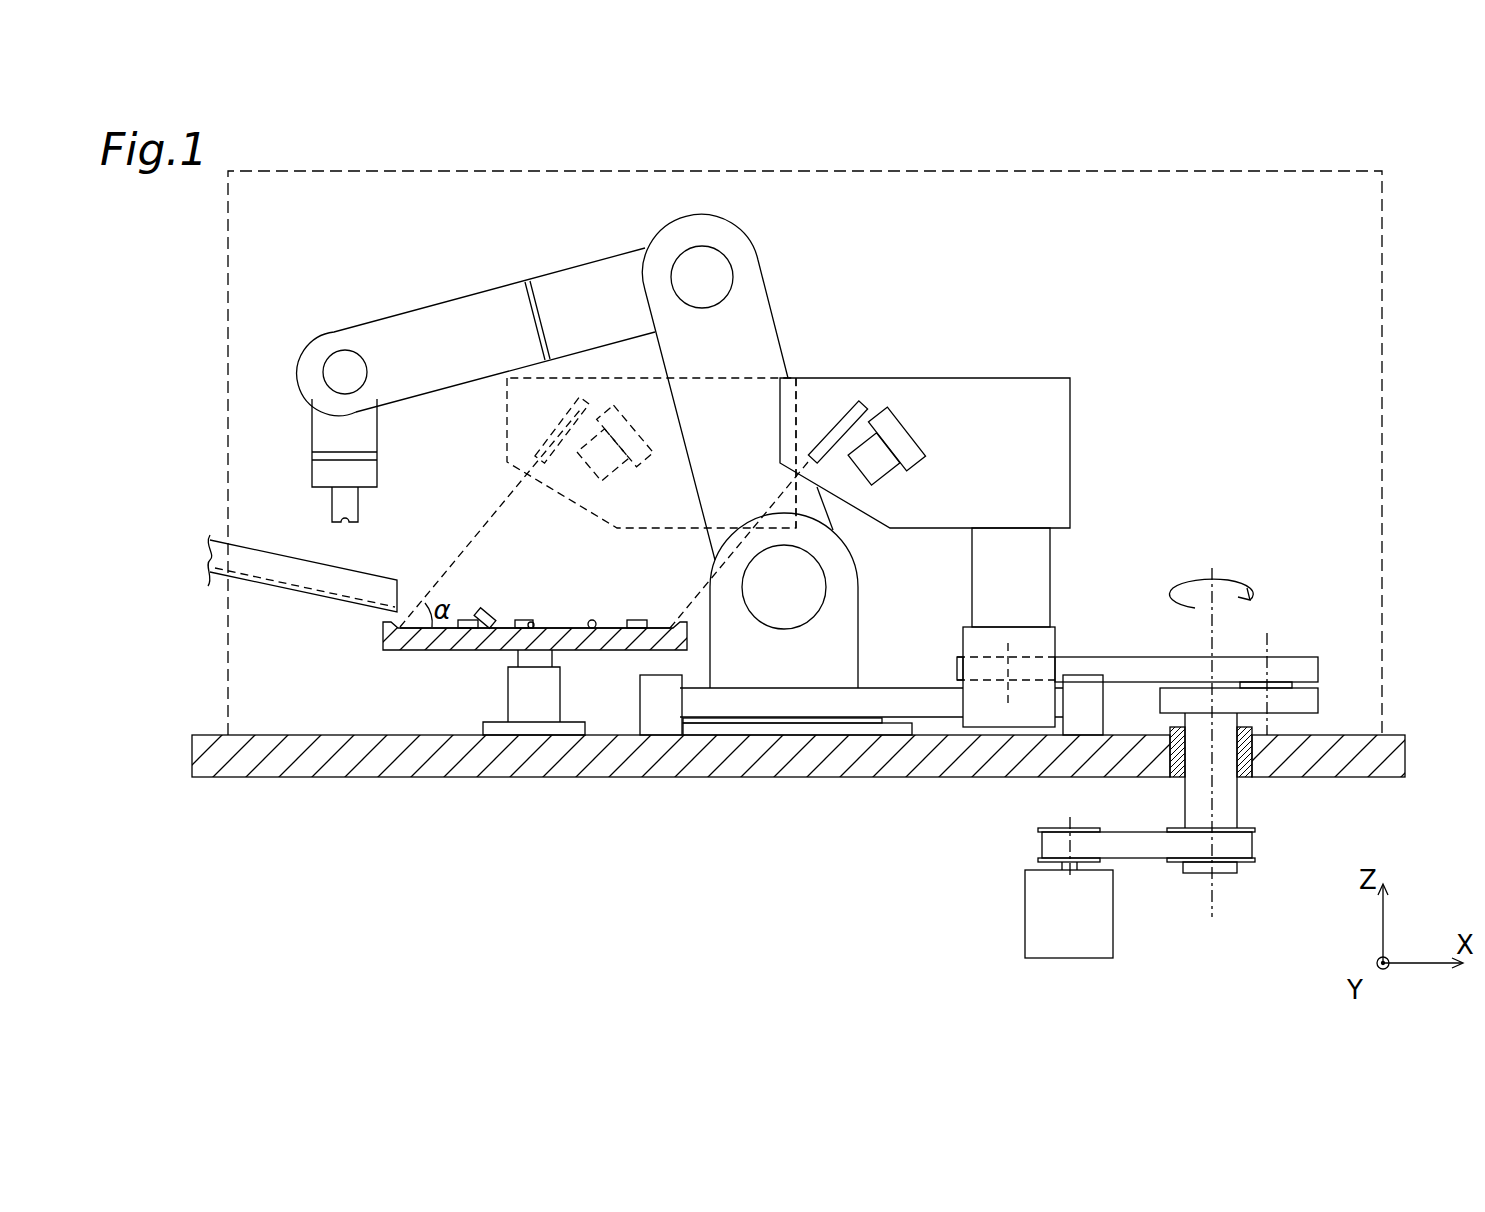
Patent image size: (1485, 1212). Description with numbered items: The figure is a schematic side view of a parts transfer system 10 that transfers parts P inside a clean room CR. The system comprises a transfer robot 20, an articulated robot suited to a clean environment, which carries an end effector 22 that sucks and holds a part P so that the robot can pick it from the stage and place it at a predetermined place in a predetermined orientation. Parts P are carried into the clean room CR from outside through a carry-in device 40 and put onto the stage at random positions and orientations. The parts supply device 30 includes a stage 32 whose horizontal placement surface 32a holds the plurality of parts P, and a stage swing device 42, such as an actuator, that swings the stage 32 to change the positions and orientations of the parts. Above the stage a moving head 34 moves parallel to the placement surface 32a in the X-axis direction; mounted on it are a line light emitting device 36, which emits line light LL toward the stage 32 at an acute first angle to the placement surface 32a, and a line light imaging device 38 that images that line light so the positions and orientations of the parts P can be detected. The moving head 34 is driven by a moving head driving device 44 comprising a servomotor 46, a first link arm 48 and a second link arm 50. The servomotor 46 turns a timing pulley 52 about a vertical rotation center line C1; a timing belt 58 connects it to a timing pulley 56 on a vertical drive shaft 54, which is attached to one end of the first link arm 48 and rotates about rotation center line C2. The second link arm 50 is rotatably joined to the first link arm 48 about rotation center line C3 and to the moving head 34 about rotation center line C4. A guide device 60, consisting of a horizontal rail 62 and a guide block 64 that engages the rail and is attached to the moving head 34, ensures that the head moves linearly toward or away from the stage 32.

The parts transfer system 10 is at (313, 268).
The transfer robot 20 is at (446, 303).
The end effector 22 is at (337, 504).
The parts supply device 30 is at (914, 387).
The stage 32 is at (446, 651).
The placement surface 32a is at (553, 627).
The moving head 34 is at (681, 375).
The line light emitting device 36 is at (858, 404).
The line light imaging device 38 is at (886, 463).
The carry-in device 40 is at (296, 592).
The stage swing device 42 is at (519, 708).
The moving head driving device 44 is at (1168, 748).
The servomotor 46 is at (1054, 930).
The first link arm 48 is at (1318, 704).
The second link arm 50 is at (1318, 666).
The timing pulley 52 is at (1057, 827).
The drive shaft 54 is at (1225, 812).
The timing pulley 56 is at (1255, 862).
The timing belt 58 is at (1045, 845).
The guide device 60 is at (872, 624).
The rail 62 is at (920, 688).
The guide block 64 is at (1047, 637).
The clean room CR is at (1322, 217).
The line light LL is at (470, 541).
The part P is at (520, 620).
The rotation center line C1 is at (1085, 836).
The rotation center line C2 is at (1212, 727).
The rotation center line C3 is at (1267, 670).
The rotation center line C4 is at (1026, 682).